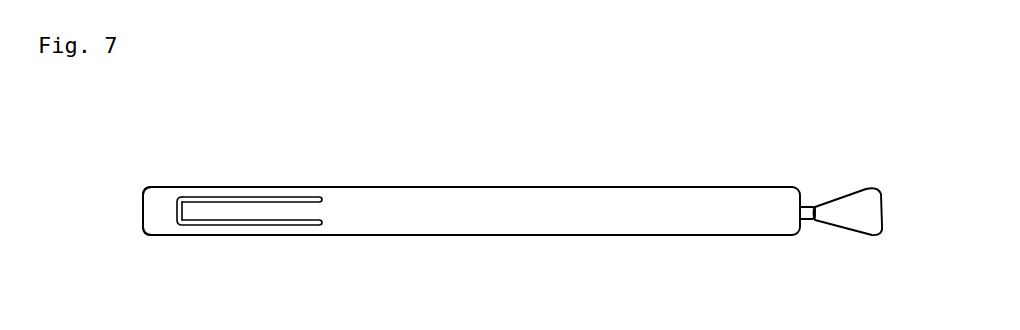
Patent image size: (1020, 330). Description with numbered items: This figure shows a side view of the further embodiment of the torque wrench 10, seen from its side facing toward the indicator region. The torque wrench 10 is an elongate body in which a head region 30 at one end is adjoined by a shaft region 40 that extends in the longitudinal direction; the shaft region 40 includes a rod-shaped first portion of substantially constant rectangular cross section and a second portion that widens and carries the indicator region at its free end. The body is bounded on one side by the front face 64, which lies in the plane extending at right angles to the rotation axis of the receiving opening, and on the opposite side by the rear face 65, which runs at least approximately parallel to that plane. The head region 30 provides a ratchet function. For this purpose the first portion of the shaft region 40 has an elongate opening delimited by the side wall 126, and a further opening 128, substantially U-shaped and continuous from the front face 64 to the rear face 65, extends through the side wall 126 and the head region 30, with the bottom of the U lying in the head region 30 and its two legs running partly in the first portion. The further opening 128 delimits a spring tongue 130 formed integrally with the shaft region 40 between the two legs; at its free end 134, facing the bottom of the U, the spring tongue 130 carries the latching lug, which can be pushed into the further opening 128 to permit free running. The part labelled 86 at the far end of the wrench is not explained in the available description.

The torque wrench 10 is at (512, 196).
The head region 30 is at (181, 175).
The shaft region 40 is at (471, 197).
The front face 64 is at (398, 238).
The rear face 65 is at (398, 187).
The handle tab 86 is at (863, 208).
The side wall 126 is at (530, 217).
The further opening 128 is at (233, 196).
The spring tongue 130 is at (268, 210).
The free end 134 is at (190, 213).